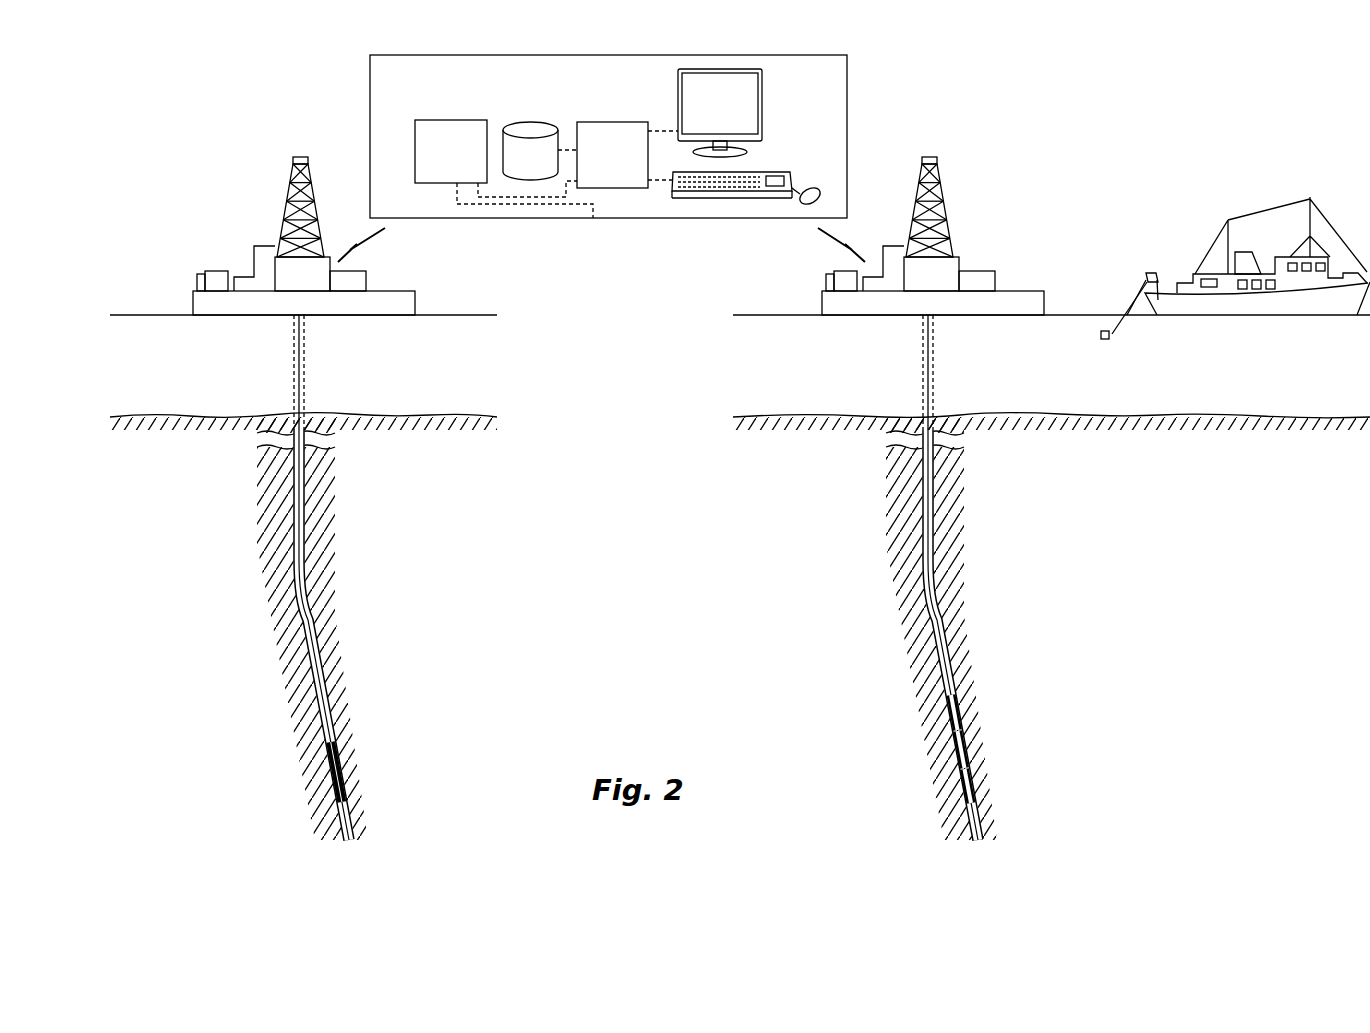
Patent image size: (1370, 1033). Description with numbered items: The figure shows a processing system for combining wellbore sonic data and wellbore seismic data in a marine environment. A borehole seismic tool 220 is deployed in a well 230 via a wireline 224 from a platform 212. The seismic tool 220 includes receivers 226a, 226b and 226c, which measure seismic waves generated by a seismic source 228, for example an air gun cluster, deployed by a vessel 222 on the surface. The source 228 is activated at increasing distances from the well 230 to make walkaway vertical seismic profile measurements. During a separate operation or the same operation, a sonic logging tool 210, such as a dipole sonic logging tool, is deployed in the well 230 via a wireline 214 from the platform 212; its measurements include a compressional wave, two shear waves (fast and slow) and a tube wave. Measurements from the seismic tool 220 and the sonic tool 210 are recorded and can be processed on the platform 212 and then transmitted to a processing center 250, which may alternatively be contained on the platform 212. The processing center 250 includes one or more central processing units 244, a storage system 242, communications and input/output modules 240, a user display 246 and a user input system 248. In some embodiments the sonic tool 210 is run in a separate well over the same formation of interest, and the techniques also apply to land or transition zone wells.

The platform 212 is at (176, 207).
The vessel 222 is at (1235, 259).
The seismic source 228 is at (1156, 318).
The well 230 is at (656, 412).
The wireline 214 is at (322, 635).
The sonic logging tool 210 is at (292, 772).
The wireline 224 is at (973, 635).
The borehole seismic tool 220 is at (973, 757).
The receiver 226a is at (1010, 712).
The receiver 226b is at (1018, 749).
The receiver 226c is at (1025, 786).
The processing center 250 is at (428, 93).
The communications and input/output modules 240 is at (431, 164).
The storage system 242 is at (510, 171).
The central processing units 244 is at (592, 168).
The user display 246 is at (699, 119).
The user input system 248 is at (799, 154).